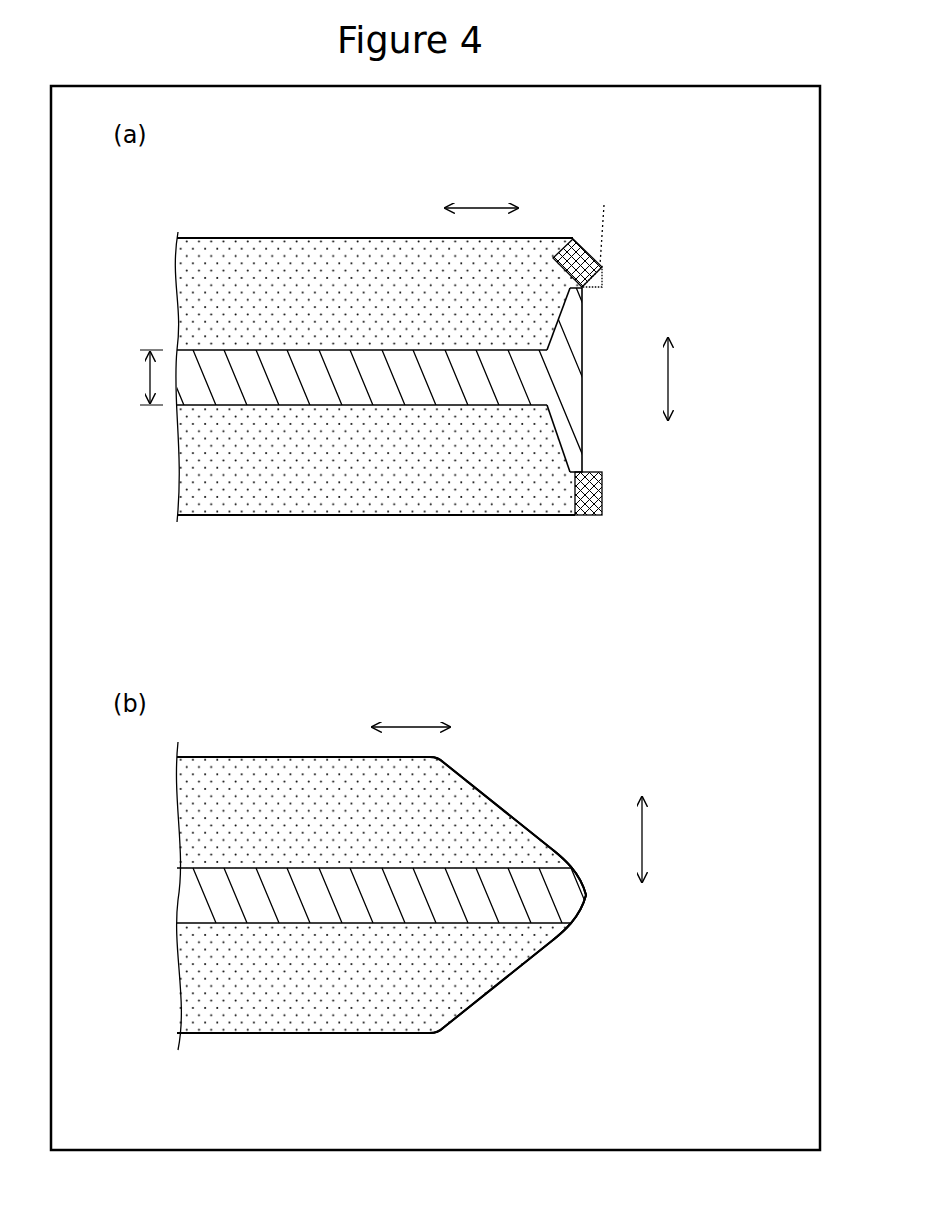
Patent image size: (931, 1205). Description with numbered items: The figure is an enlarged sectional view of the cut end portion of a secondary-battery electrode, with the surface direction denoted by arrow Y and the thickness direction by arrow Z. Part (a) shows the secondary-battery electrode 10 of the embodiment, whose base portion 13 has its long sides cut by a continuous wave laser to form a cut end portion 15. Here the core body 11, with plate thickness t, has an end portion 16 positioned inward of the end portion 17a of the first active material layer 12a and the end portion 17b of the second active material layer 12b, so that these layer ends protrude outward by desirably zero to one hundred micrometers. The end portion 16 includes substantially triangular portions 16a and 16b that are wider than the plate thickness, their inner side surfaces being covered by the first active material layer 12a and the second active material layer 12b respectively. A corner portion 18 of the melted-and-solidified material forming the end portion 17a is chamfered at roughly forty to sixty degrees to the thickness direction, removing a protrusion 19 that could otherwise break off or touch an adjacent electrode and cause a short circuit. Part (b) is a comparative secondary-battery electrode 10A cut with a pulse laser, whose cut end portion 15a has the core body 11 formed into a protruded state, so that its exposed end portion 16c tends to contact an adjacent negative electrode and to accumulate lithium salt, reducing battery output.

The secondary-battery electrode 10 is at (417, 337).
The secondary-battery electrode (comparative example) 10A is at (424, 882).
The core body 11 is at (218, 350).
The first active material layer 12a is at (258, 276).
The second active material layer 12b is at (290, 500).
The base portion 13 is at (376, 237).
The cut end portion 15 is at (604, 356).
The cut end portion (comparative example) 15a is at (518, 1006).
The end portion of the core body 16 is at (585, 369).
The substantially triangular portion 16a is at (552, 322).
The substantially triangular portion 16b is at (556, 430).
The end portion of the core body (comparative example) 16c is at (580, 895).
The end portion of the first active material layer 17a is at (605, 280).
The end portion of the second active material layer 17b is at (605, 482).
The corner portion 18 is at (595, 252).
The protrusion 19 is at (604, 205).